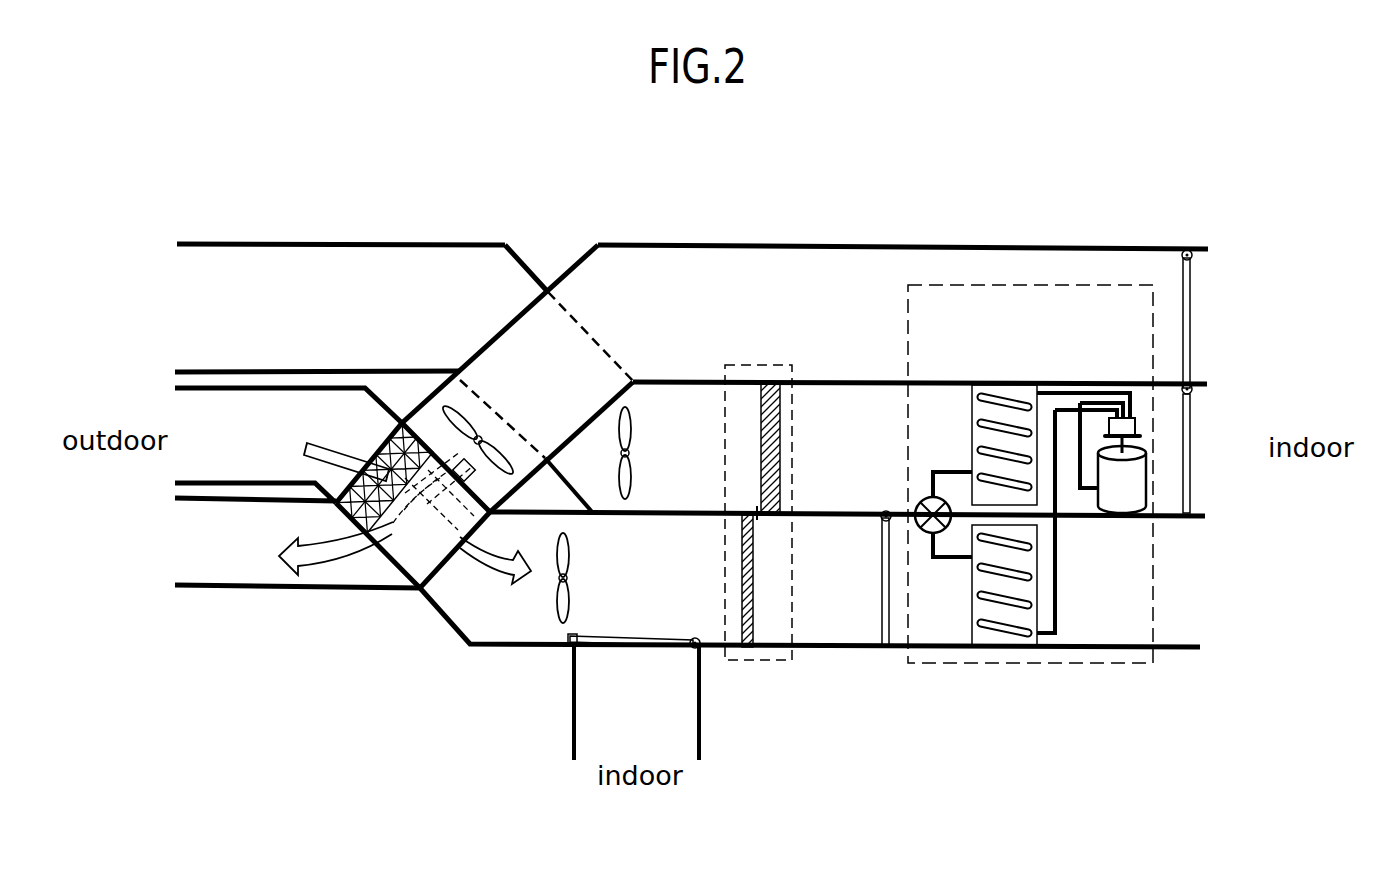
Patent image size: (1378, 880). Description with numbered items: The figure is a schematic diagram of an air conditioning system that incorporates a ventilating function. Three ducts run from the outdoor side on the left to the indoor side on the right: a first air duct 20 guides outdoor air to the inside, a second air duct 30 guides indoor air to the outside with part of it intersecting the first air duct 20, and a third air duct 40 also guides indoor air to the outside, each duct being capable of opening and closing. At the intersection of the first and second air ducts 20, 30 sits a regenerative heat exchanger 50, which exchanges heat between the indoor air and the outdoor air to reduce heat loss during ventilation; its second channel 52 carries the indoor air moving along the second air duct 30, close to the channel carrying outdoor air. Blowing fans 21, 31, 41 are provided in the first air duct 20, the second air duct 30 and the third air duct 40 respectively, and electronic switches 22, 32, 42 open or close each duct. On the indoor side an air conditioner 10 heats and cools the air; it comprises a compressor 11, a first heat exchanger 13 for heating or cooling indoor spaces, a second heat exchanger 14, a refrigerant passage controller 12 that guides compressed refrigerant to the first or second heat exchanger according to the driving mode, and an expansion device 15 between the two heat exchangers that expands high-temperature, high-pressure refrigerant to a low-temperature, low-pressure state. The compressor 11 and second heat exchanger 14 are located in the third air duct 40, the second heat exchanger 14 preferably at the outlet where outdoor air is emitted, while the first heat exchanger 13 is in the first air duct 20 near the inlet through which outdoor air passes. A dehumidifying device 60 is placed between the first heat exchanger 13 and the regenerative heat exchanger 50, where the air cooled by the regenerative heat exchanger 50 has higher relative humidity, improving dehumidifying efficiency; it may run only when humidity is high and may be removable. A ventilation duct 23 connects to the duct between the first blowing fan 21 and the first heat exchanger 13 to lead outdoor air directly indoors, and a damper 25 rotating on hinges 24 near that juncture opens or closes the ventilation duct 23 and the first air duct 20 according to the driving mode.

The air conditioner 10 is at (1152, 617).
The compressor 11 is at (1130, 502).
The refrigerant passage controller 12 is at (1130, 427).
The first heat exchanger 13 is at (990, 637).
The second heat exchanger 14 is at (1030, 390).
The expansion device 15 is at (929, 496).
The first air duct 20 is at (210, 403).
The blowing fan 21 is at (558, 598).
The electronic switch 22 is at (878, 627).
The ventilation duct 23 is at (703, 741).
The hinge 24 is at (688, 650).
The damper 25 is at (607, 648).
The second air duct 30 is at (231, 590).
The blowing fan 31 is at (466, 410).
The electronic switch 32 is at (1192, 315).
The third air duct 40 is at (203, 267).
The blowing fan 41 is at (629, 420).
The electronic switch 42 is at (1190, 482).
The regenerative heat exchanger 50 is at (417, 543).
The second channel 52 is at (374, 558).
The dehumidifying device 60 is at (758, 660).